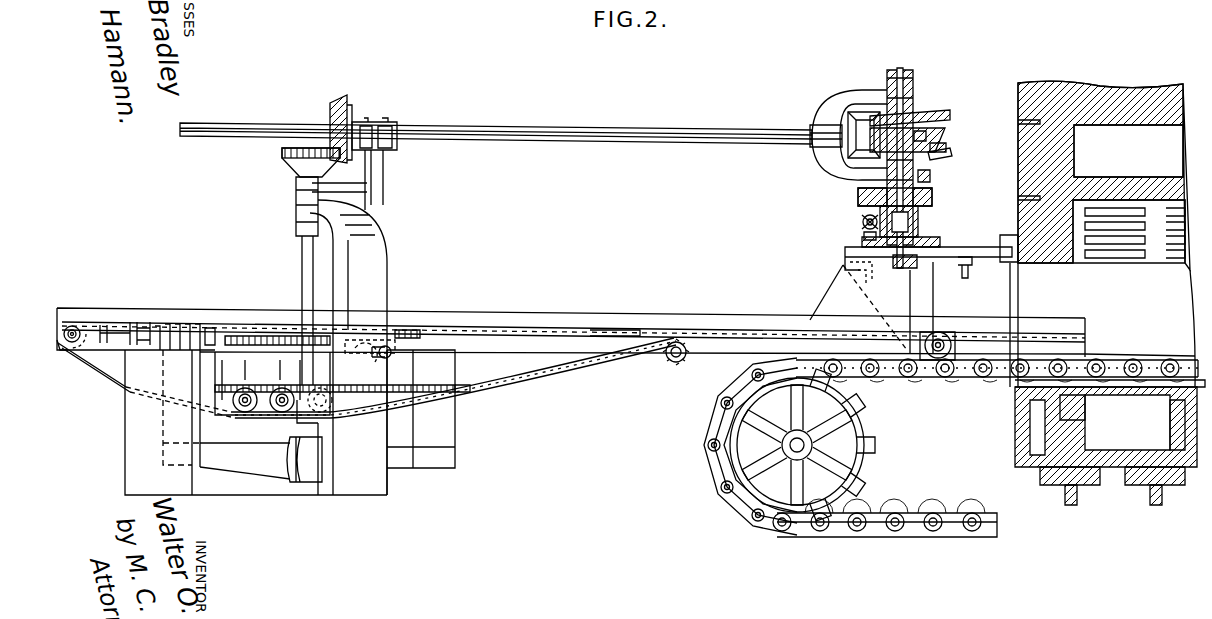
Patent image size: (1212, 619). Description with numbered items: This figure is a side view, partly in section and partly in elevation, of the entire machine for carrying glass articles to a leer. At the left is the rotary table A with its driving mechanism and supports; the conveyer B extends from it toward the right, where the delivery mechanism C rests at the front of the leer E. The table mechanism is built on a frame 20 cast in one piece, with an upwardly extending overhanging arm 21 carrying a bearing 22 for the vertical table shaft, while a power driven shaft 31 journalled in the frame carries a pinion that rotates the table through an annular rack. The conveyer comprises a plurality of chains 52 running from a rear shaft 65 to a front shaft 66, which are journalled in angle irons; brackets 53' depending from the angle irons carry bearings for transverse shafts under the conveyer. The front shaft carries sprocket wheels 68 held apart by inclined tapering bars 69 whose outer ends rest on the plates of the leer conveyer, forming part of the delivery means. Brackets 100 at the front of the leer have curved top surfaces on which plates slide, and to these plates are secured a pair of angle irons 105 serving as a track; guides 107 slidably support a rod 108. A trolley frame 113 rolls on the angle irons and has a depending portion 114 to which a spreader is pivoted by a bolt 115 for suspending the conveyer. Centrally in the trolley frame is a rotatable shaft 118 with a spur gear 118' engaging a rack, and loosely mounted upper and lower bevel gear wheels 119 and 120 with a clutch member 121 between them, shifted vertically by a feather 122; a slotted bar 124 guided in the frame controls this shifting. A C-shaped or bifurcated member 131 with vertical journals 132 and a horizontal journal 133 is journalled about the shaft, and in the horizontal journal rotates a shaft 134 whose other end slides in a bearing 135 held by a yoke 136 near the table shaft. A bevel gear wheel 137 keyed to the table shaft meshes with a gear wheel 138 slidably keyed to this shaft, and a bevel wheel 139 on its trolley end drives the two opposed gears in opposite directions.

The frame 20 is at (440, 428).
The overhanging arm 21 is at (375, 245).
The bearing 22 is at (297, 190).
The power driven shaft 31 is at (387, 353).
The conveyer chains 52 is at (106, 321).
The brackets 53' is at (342, 383).
The rear shaft 65 is at (74, 326).
The front shaft 66 is at (950, 338).
The sprocket wheels 68 is at (930, 334).
The inclined tapering bars 69 is at (1066, 265).
The brackets 100 is at (1007, 467).
The angle irons 105 is at (922, 240).
The guides 107 is at (863, 232).
The rod 108 is at (863, 221).
The trolley frame 113 is at (905, 70).
The depending portion 114 is at (920, 220).
The bolt 115 is at (905, 262).
The rotatable shaft 118 is at (923, 100).
The spur gear 118' is at (930, 192).
The upper bevel gear wheel 119 is at (918, 127).
The lower bevel gear wheel 120 is at (952, 152).
The clutch member 121 is at (946, 142).
The feather 122 is at (928, 136).
The bar 124 is at (931, 176).
The C-shaped or bifurcated member 131 is at (845, 90).
The vertical journals 132 is at (913, 86).
The horizontal journal 133 is at (824, 150).
The shaft 134 is at (746, 130).
The bearing 135 is at (397, 142).
The yoke 136 is at (385, 185).
The bevel gear wheel 137 is at (284, 155).
The gear wheel 138 is at (350, 112).
The bevel wheel 139 is at (852, 156).
The rotary table A is at (400, 325).
The conveyer B is at (616, 322).
The delivery mechanism C is at (1045, 357).
The leer E is at (1155, 360).